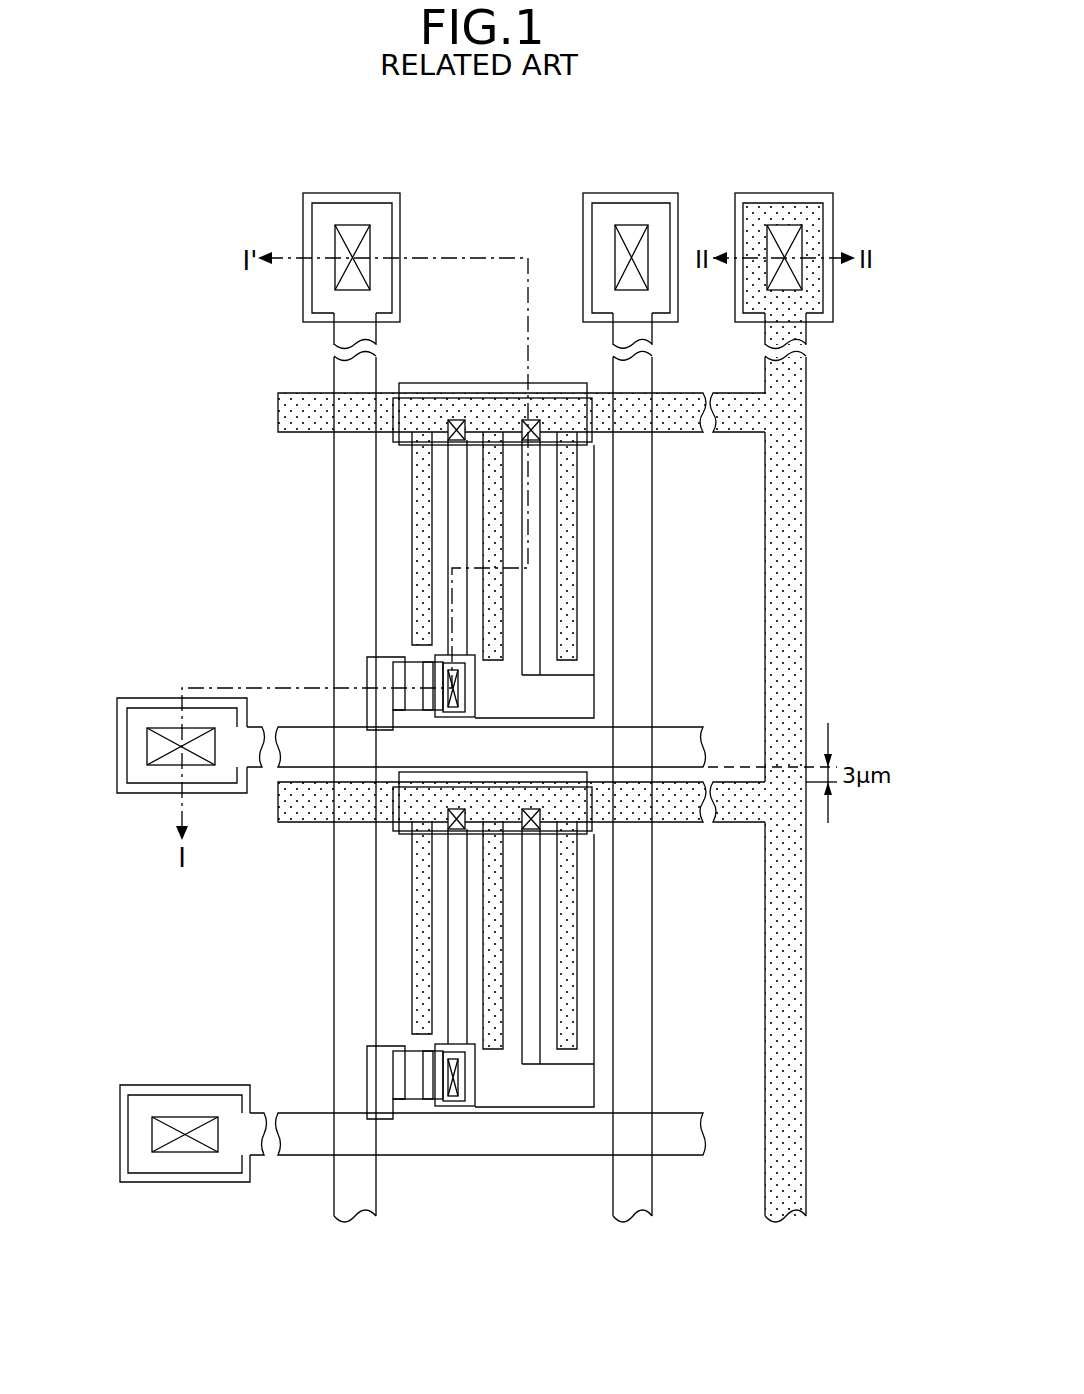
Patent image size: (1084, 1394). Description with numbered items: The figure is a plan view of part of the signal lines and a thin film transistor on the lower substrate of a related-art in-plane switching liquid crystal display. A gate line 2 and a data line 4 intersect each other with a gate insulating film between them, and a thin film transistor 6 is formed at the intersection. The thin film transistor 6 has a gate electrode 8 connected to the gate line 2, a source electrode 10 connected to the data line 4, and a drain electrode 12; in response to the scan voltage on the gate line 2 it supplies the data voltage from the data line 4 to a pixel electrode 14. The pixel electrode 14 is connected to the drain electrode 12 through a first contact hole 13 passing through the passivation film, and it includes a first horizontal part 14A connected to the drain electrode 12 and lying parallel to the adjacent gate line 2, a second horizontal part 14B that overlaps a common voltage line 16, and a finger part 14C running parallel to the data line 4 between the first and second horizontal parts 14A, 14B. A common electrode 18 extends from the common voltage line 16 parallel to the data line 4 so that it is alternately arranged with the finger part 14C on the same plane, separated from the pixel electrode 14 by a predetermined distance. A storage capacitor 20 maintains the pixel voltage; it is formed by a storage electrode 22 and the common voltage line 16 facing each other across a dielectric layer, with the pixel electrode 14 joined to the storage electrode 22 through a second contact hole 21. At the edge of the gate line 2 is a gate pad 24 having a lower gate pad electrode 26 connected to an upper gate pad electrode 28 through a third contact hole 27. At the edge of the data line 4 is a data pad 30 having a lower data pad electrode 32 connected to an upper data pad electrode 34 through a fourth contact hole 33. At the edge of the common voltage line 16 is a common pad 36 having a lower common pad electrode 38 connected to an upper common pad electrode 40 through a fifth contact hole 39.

The gate line 2 is at (676, 742).
The data line 4 is at (336, 582).
The thin film transistor 6 is at (367, 712).
The gate electrode 8 is at (375, 655).
The source electrode 10 is at (376, 672).
The drain electrode 12 is at (437, 668).
The first contact hole 13 is at (462, 690).
The pixel electrode 14 is at (657, 569).
The first horizontal part 14A is at (592, 684).
The second horizontal part 14B is at (592, 442).
The finger part 14C is at (535, 558).
The common voltage line 16 is at (288, 398).
The common electrode 18 is at (410, 492).
The storage capacitor 20 is at (492, 373).
The second contact hole 21 is at (531, 420).
The storage electrode 22 is at (575, 385).
The gate pad 24 is at (162, 724).
The lower gate pad electrode 26 is at (127, 745).
The third contact hole 27 is at (157, 770).
The upper gate pad electrode 28 is at (128, 700).
The data pad 30 is at (373, 237).
The lower data pad electrode 32 is at (333, 205).
The fourth contact hole 33 is at (337, 240).
The upper data pad electrode 34 is at (372, 196).
The common pad 36 is at (821, 249).
The lower common pad electrode 38 is at (765, 205).
The fifth contact hole 39 is at (800, 278).
The upper common pad electrode 40 is at (808, 195).